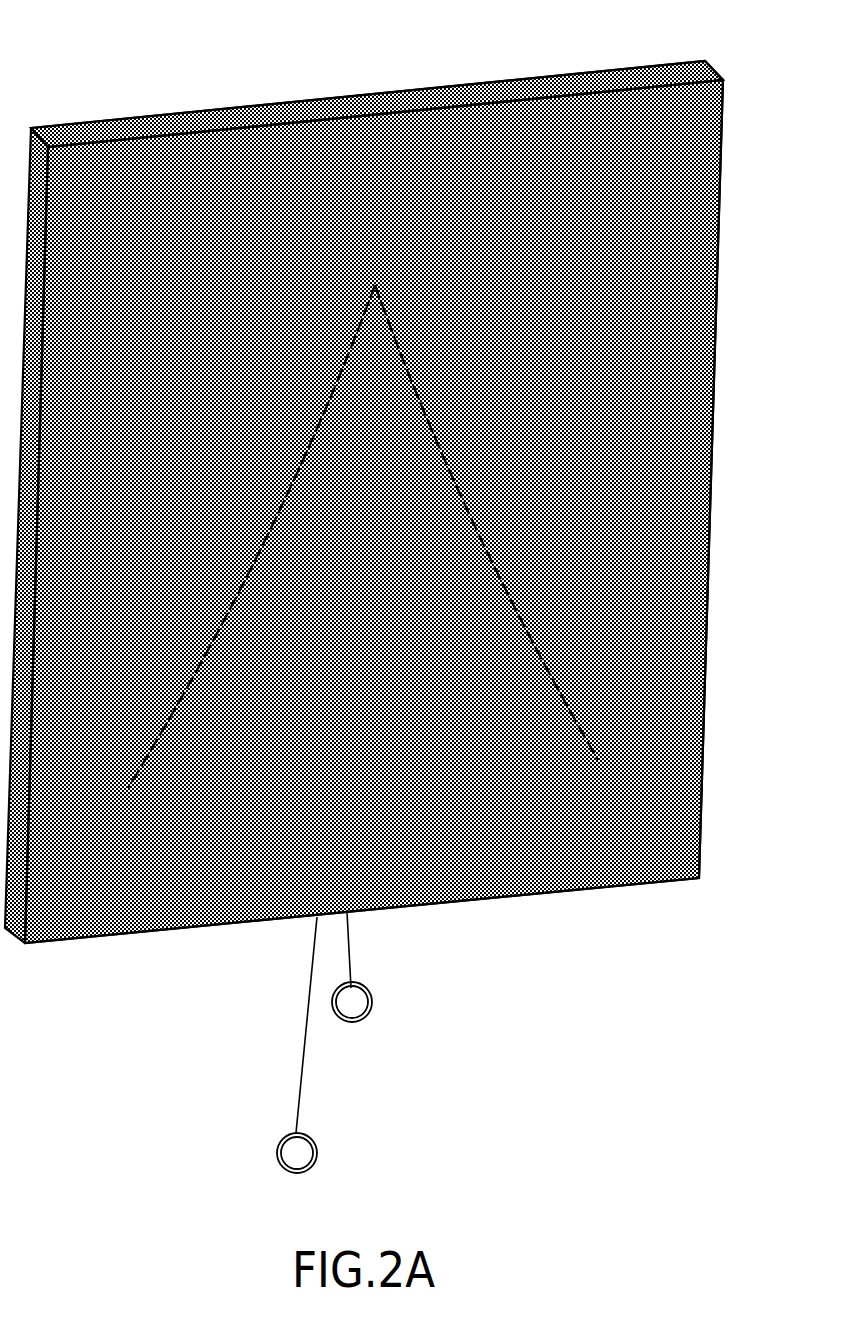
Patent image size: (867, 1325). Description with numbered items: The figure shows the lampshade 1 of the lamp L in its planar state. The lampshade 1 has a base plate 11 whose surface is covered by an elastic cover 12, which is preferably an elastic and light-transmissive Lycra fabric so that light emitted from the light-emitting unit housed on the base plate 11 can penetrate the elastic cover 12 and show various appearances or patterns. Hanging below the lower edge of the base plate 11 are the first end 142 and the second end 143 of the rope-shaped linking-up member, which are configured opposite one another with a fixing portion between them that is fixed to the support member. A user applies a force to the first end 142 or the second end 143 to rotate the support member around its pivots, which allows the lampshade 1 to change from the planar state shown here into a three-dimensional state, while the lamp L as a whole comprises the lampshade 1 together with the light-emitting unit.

The lampshade 1 is at (438, 76).
The base plate 11 is at (618, 77).
The elastic cover 12 is at (718, 248).
The first end 142 is at (347, 958).
The second end 143 is at (308, 977).
The lamp L is at (104, 43).